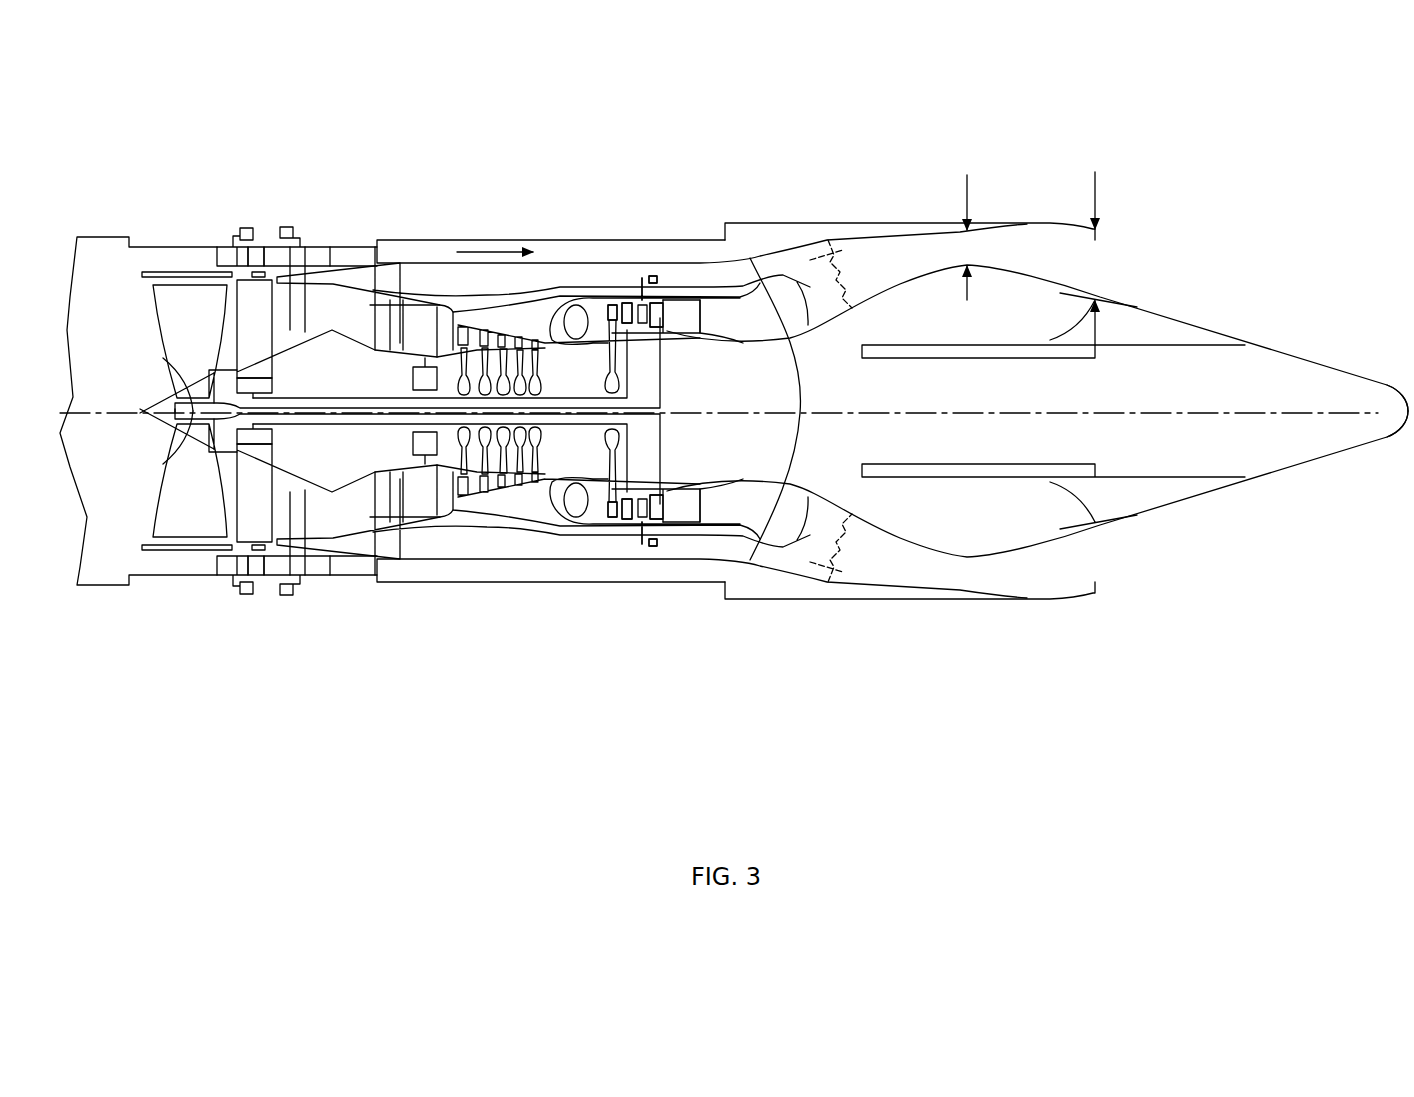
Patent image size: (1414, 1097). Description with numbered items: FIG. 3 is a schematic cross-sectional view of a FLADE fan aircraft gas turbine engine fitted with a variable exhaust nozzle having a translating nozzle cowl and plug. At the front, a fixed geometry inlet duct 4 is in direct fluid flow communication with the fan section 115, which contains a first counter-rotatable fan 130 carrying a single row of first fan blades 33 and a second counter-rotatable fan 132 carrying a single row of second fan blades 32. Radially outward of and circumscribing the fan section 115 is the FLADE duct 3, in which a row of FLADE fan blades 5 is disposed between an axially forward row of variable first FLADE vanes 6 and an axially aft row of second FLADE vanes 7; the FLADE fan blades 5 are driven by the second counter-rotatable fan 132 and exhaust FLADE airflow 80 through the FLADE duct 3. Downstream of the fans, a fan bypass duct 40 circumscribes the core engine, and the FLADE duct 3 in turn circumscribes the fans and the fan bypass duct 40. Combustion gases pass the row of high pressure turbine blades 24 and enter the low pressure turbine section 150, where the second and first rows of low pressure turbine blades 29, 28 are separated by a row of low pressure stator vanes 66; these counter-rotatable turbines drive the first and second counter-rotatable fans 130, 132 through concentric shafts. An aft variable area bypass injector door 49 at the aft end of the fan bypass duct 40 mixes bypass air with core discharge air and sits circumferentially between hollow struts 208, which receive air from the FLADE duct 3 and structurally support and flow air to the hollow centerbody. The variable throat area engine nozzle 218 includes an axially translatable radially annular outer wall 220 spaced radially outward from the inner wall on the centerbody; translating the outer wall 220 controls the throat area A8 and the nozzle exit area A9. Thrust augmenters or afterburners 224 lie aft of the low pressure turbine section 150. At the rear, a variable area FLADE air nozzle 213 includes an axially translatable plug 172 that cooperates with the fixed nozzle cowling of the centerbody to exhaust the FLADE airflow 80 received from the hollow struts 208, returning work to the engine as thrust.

The FLADE duct 3 is at (407, 250).
The fixed geometry inlet duct 4 is at (102, 237).
The FLADE fan blades 5 is at (258, 247).
The variable first FLADE vanes 6 is at (230, 247).
The variable second FLADE vanes 7 is at (303, 247).
The high pressure turbine blades 24 is at (612, 303).
The first row of low pressure turbine blades 28 is at (623, 303).
The second row of low pressure turbine blades 29 is at (660, 303).
The second fan blades 32 is at (260, 322).
The first fan blades 33 is at (168, 342).
The fan bypass duct 40 is at (433, 277).
The aft variable area bypass injector door 49 is at (810, 330).
The low pressure stator vanes 66 is at (642, 302).
The FLADE airflow 80 is at (483, 250).
The fan section 115 is at (209, 599).
The first counter-rotatable fan 130 is at (172, 443).
The second counter-rotatable fan 132 is at (272, 388).
The low pressure turbine section 150 is at (669, 338).
The axially translatable plug 172 is at (1310, 358).
The hollow struts 208 is at (855, 300).
The variable area FLADE air nozzle 213 is at (1172, 320).
The variable throat area engine nozzle 218 is at (898, 217).
The axially translatable radially annular outer wall 220 is at (803, 222).
The thrust augmenters or afterburners 224 is at (866, 274).
The throat area A8 is at (967, 187).
The nozzle exit area A9 is at (1097, 181).